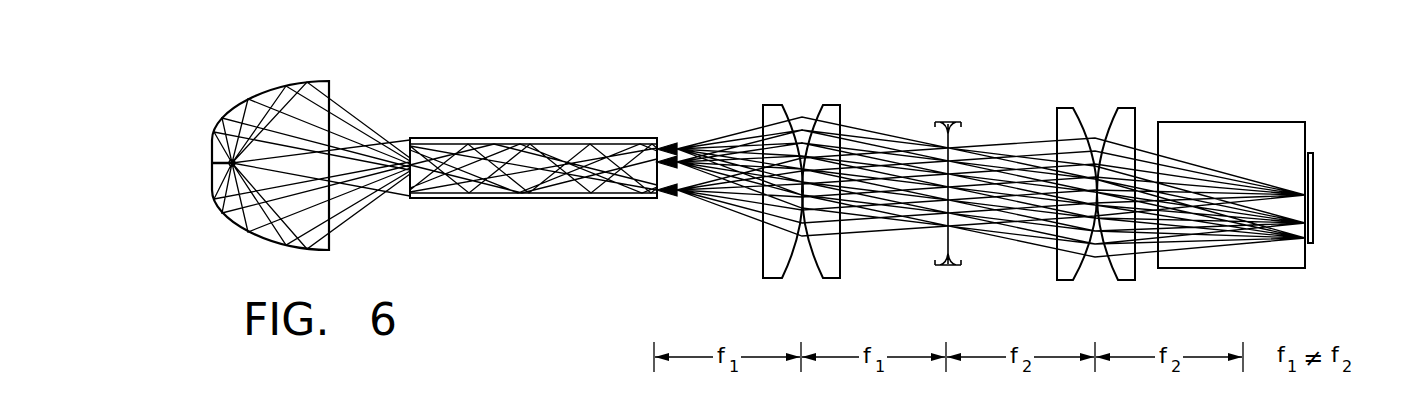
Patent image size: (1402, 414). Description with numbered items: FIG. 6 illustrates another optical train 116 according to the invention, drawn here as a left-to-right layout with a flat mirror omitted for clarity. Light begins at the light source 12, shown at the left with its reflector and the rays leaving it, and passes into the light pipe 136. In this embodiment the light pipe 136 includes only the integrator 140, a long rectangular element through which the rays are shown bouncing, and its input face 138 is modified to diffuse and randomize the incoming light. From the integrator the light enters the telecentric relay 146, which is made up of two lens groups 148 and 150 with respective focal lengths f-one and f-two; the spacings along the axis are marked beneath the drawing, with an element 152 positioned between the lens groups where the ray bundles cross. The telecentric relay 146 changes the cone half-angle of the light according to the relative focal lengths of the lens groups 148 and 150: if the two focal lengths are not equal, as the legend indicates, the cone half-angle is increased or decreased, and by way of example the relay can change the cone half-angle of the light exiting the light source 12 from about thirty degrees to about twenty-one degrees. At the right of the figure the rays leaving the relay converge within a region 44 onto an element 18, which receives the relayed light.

The light source 12 is at (250, 88).
The light pipe 136 is at (543, 161).
The integrator 140 is at (448, 137).
The input face 138 is at (412, 167).
The optical train 116 is at (955, 82).
The telecentric relay 146 is at (962, 196).
The lens group 148 is at (763, 100).
The lens group 150 is at (1057, 102).
The aperture stop 152 is at (912, 200).
The imaging device housing 44 is at (1208, 122).
The light valve / target 18 is at (1316, 158).